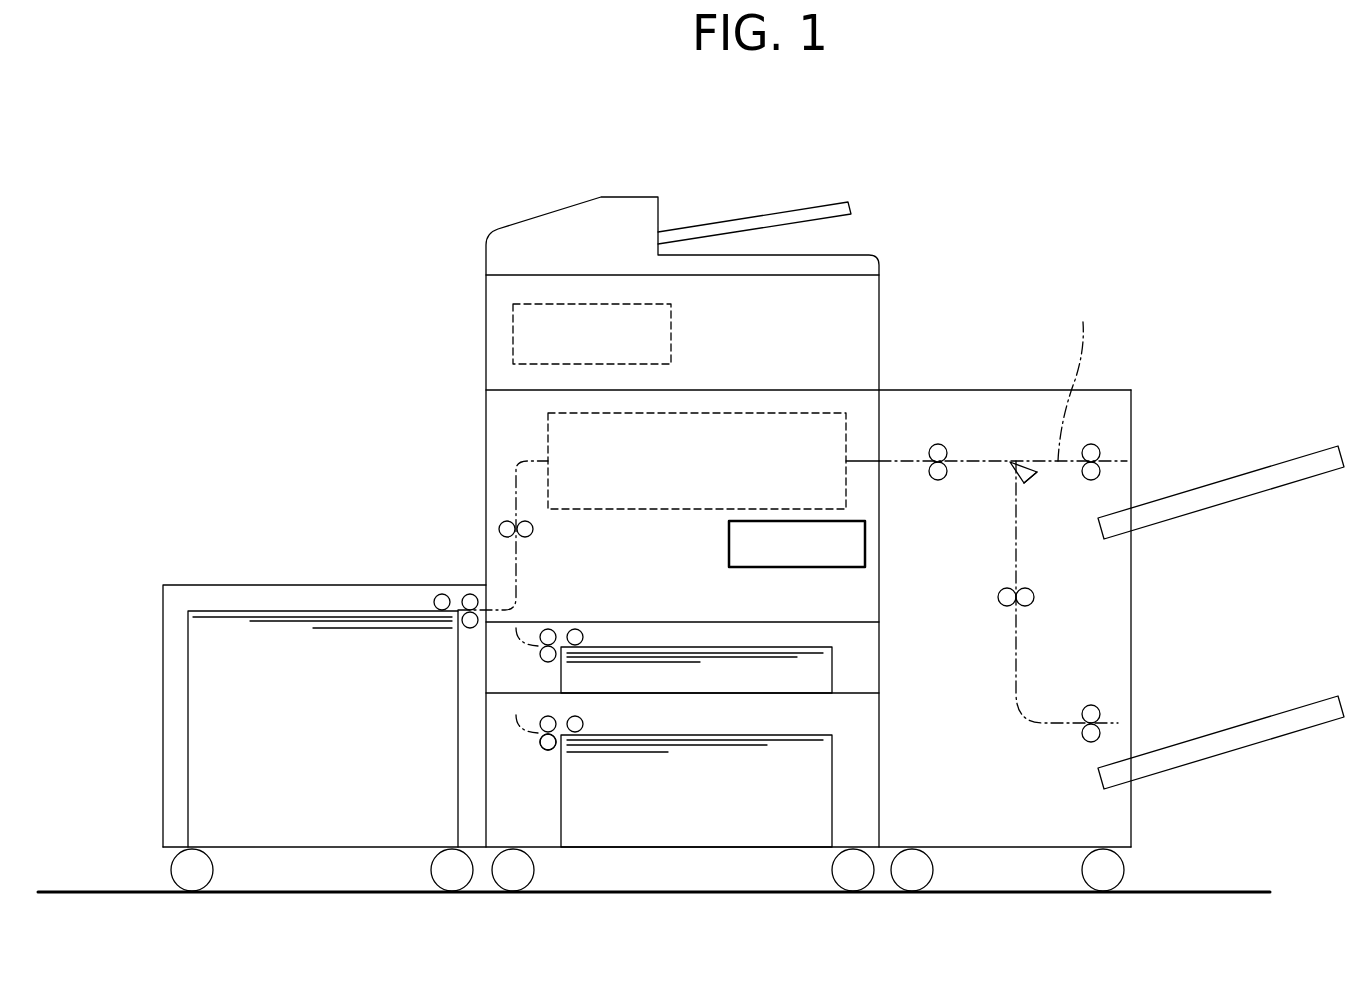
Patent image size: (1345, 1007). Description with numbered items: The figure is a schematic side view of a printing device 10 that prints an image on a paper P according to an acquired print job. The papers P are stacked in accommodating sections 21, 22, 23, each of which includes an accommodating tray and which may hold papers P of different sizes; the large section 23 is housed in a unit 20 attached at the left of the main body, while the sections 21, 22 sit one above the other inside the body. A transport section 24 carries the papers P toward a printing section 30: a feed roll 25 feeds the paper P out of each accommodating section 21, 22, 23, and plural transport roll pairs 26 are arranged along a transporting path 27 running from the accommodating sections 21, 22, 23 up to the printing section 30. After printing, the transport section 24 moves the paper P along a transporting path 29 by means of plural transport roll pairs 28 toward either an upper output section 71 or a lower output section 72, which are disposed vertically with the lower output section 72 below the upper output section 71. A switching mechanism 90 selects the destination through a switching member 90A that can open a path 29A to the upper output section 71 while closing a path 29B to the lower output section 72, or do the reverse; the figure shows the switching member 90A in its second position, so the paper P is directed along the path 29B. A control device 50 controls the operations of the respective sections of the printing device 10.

The printing device 10 is at (389, 156).
The sheet feeding device 20 is at (160, 592).
The accommodating section 21 is at (832, 670).
The accommodating section 22 is at (832, 762).
The accommodating section 23 is at (188, 713).
The transport section 24 is at (548, 752).
The feed roll 25 is at (434, 597).
The transport roll pairs 26 is at (522, 521).
The transporting path 27 is at (520, 450).
The transport roll pairs 28 is at (929, 453).
The transporting path 29 is at (985, 470).
The path 29A is at (1068, 375).
The path 29B is at (1020, 645).
The printing section 30 is at (800, 407).
The control device 50 is at (865, 548).
The upper output section 71 is at (1290, 455).
The lower output section 72 is at (1290, 705).
The switching mechanism 90 is at (1013, 455).
The switching member 90A is at (1030, 484).
The paper P is at (230, 617).